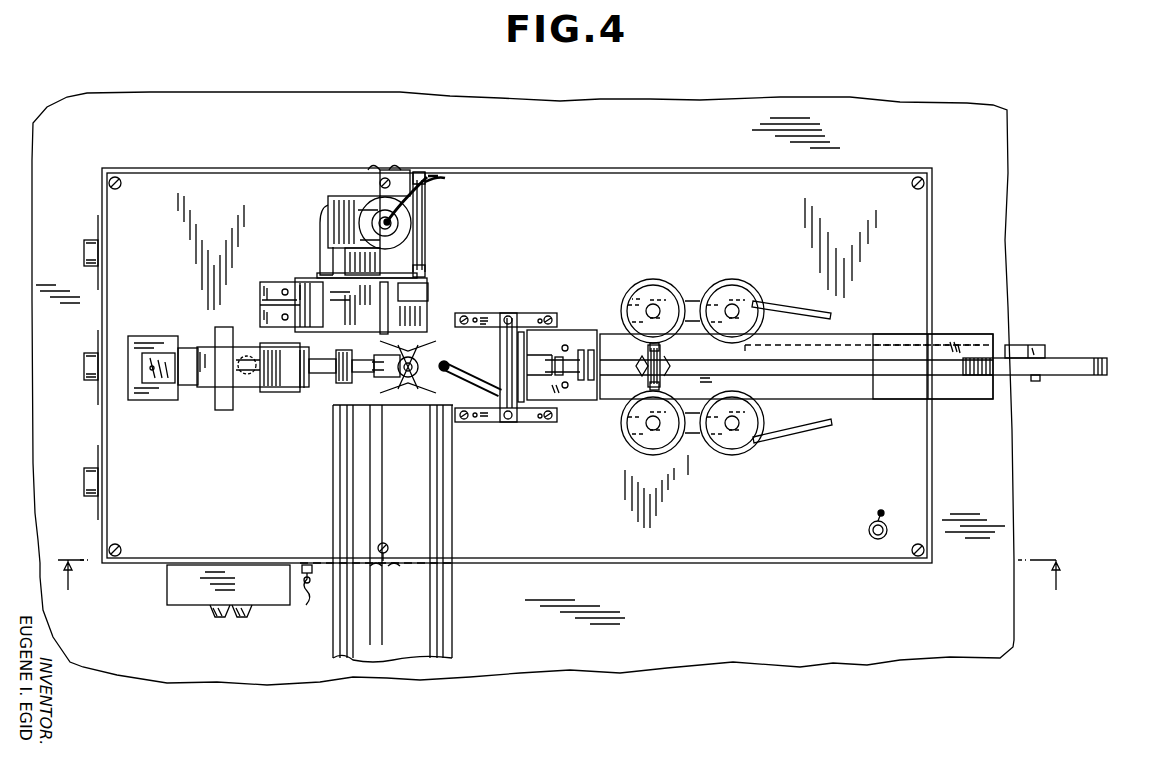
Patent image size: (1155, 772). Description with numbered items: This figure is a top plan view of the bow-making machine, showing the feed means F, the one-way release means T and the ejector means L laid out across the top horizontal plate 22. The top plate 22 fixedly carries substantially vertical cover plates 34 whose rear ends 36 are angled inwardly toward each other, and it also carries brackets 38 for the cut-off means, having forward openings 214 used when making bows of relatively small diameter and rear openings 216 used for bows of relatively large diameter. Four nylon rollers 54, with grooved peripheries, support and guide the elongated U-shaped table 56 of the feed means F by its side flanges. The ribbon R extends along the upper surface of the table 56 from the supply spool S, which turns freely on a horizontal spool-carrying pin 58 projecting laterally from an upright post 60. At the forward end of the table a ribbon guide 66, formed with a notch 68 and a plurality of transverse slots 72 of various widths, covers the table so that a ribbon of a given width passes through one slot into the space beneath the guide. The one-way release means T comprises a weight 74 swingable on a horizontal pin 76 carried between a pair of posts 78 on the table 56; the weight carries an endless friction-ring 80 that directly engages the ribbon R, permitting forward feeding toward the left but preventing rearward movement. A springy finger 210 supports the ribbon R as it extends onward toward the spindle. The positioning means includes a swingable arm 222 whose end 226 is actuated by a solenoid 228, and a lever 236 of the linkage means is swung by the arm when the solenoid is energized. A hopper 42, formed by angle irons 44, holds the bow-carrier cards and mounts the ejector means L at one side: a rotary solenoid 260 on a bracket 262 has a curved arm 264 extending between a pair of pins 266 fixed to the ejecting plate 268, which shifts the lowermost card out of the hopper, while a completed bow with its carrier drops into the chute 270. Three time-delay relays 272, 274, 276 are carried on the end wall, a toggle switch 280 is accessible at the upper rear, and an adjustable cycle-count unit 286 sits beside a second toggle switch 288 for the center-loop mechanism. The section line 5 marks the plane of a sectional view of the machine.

The top horizontal plate 22 is at (721, 533).
The vertical cover plates 34 is at (696, 437).
The rear ends of cover plates 36 is at (808, 310).
The brackets 38 is at (528, 422).
The hopper 42 is at (407, 286).
The angle irons 44 is at (296, 280).
The nylon rollers 54 is at (735, 285).
The table 56 is at (944, 335).
The spool-carrying pin 58 is at (1038, 383).
The upright post 60 is at (1032, 345).
The ribbon guide 66 is at (577, 338).
The notch 68 is at (561, 352).
The transverse slots 72 is at (588, 352).
The weight 74 is at (668, 383).
The horizontal pin 76 is at (662, 367).
The posts 78 is at (648, 348).
The friction-ring 80 is at (636, 367).
The springy finger 210 is at (454, 362).
The forward openings 214 is at (477, 318).
The rear openings 216 is at (550, 416).
The swingable arm 222 is at (291, 390).
The end of swingable arm 226 is at (157, 365).
The solenoid 228 is at (142, 337).
The lever 236 is at (332, 373).
The rotary solenoid 260 is at (362, 196).
The bracket 262 is at (328, 234).
The curved arm 264 is at (415, 223).
The pins 266 is at (422, 180).
The ejecting plate 268 is at (425, 259).
The chute 270 is at (341, 517).
The time-delay relay 272 is at (92, 228).
The time-delay relay 274 is at (92, 350).
The time-delay relay 276 is at (92, 463).
The toggle switch 280 is at (877, 512).
The adjustable unit 286 is at (228, 591).
The second toggle switch 288 is at (308, 604).
The section line 5 is at (560, 593).
The ribbon R is at (838, 350).
The supply spool S is at (1074, 363).
The one-way release means T is at (680, 352).
The feed means F is at (595, 452).
The ejector means L is at (442, 197).